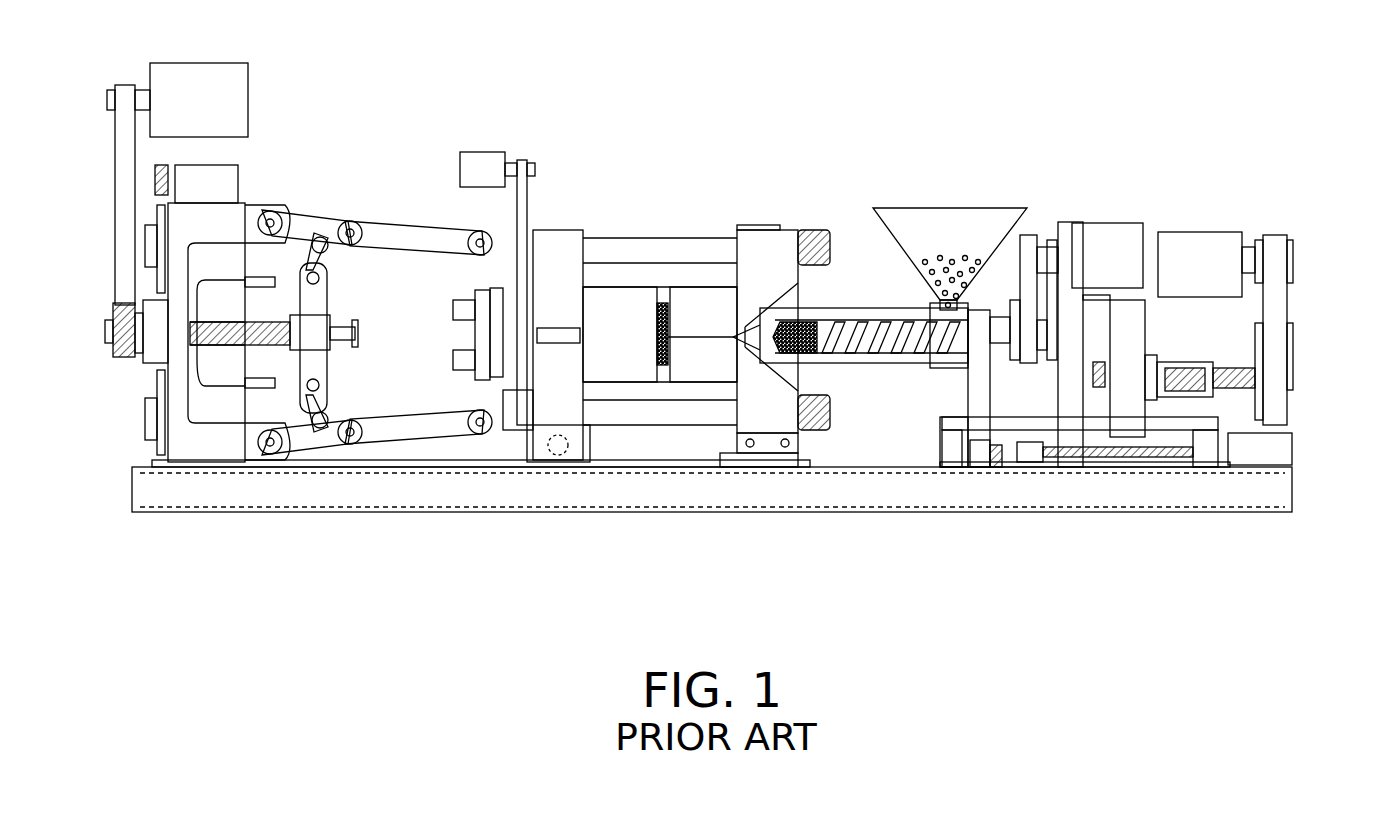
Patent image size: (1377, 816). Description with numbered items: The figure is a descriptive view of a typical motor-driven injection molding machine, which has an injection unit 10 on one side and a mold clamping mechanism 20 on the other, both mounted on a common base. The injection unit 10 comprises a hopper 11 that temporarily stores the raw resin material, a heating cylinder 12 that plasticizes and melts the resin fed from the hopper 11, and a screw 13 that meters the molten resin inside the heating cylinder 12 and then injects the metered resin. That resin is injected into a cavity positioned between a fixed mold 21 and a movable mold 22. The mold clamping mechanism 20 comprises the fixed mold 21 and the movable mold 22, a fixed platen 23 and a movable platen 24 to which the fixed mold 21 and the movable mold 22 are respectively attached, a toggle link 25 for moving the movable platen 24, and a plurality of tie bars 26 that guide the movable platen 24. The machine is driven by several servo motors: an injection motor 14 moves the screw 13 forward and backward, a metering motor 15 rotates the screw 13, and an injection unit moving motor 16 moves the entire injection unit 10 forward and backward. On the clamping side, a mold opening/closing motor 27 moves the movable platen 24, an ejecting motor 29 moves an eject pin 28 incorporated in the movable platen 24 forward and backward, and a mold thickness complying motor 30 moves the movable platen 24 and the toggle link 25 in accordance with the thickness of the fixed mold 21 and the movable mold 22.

The injection unit 10 is at (1300, 541).
The hopper 11 is at (933, 212).
The heating cylinder 12 is at (830, 312).
The screw 13 is at (893, 343).
The injection motor 14 is at (1208, 232).
The metering motor 15 is at (1100, 222).
The injection unit moving motor 16 is at (1273, 453).
The mold clamping mechanism 20 is at (800, 518).
The fixed mold 21 is at (710, 297).
The movable mold 22 is at (617, 293).
The fixed platen 23 is at (760, 257).
The movable platen 24 is at (555, 238).
The toggle link 25 is at (395, 240).
The tie bars 26 is at (650, 253).
The mold opening/closing motor 27 is at (243, 87).
The eject pin 28 is at (557, 342).
The ejecting motor 29 is at (495, 152).
The mold thickness complying motor 30 is at (225, 178).